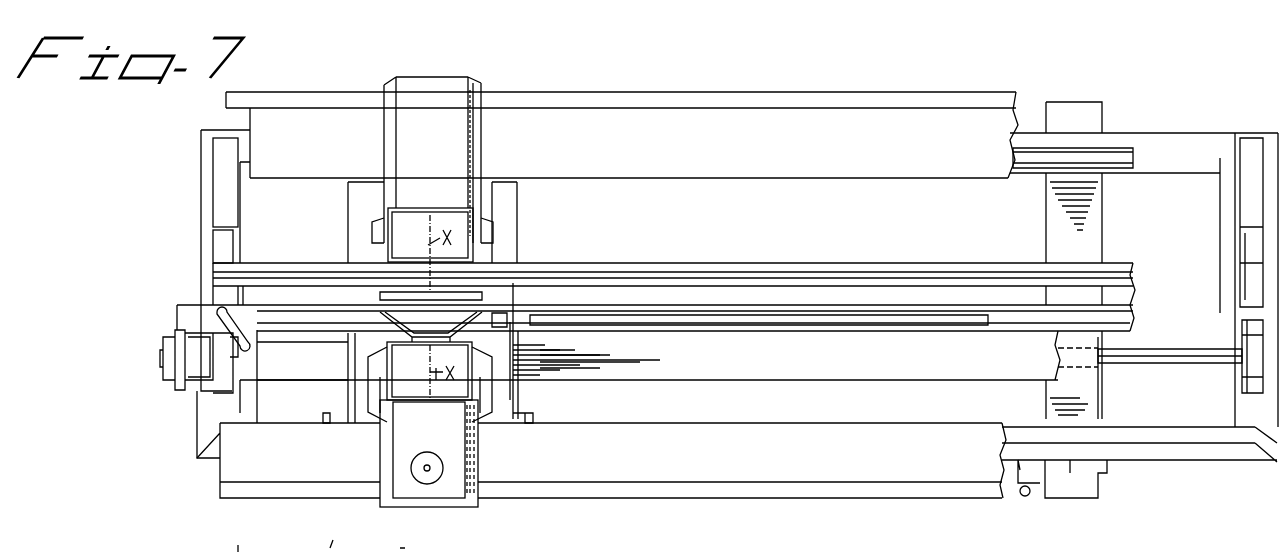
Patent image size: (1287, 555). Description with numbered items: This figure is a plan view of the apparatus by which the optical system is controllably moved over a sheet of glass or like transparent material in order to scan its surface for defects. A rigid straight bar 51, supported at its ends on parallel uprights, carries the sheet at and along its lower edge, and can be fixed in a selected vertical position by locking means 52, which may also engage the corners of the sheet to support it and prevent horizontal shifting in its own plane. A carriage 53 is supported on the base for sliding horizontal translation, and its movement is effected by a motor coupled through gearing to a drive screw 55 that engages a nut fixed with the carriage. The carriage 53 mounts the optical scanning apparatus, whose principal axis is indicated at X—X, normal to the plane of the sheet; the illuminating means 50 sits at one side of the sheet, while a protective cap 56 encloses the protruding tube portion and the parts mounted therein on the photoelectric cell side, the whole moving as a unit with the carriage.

The illuminating means 50 is at (428, 90).
The rigid straight bar 51 is at (1122, 328).
The locking means 52 is at (215, 318).
The carriage 53 is at (515, 237).
The drive screw 55 is at (1190, 362).
The protective cap 56 is at (440, 490).